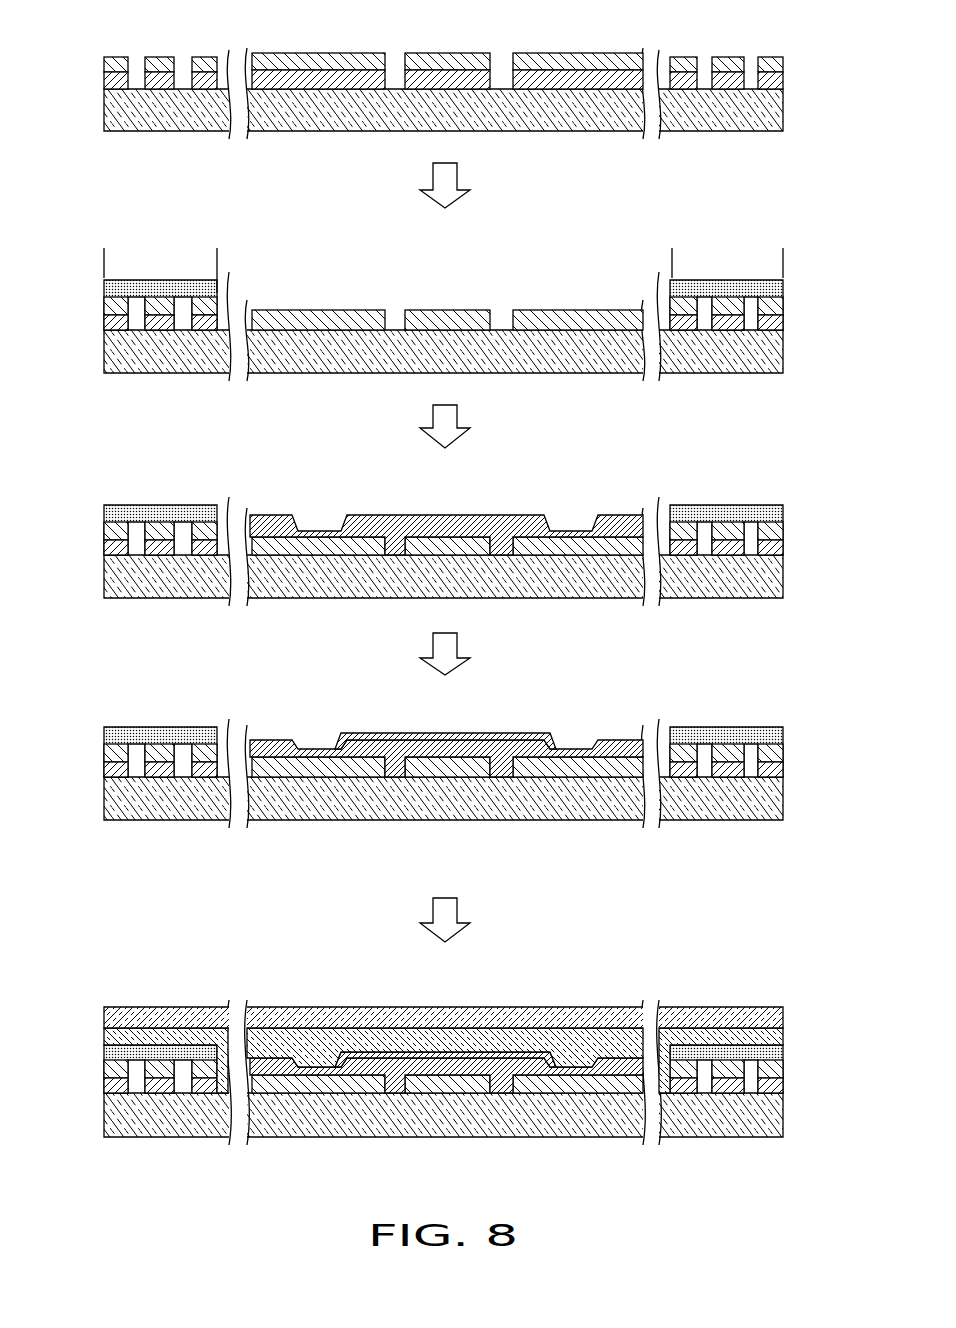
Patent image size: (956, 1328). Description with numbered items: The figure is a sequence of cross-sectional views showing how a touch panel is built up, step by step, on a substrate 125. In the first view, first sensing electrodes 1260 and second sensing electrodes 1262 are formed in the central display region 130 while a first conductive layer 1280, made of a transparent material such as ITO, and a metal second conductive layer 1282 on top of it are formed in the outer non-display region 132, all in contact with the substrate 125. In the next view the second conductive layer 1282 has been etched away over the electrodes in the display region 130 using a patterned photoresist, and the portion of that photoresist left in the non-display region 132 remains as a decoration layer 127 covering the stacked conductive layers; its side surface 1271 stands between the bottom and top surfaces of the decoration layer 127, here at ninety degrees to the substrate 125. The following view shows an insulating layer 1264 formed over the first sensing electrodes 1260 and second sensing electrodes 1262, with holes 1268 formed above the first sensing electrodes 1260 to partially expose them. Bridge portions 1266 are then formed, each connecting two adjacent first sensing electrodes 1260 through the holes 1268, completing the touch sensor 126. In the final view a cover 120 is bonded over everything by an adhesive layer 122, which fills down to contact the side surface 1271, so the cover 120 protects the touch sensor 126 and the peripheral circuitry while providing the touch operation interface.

The cover 120 is at (738, 1015).
The adhesive layer 122 is at (768, 1037).
The substrate 125 is at (103, 99).
The touch sensor 126 is at (568, 725).
The decoration layer 127 is at (108, 291).
The display region 130 is at (217, 257).
The non-display region 132 is at (783, 257).
The first sensing electrodes 1260 is at (318, 82).
The second sensing electrodes 1262 is at (452, 80).
The insulating layer 1264 is at (393, 531).
The bridge portions 1266 is at (430, 733).
The holes 1268 is at (320, 524).
The side surface 1271 is at (215, 517).
The first conductive layer 1280 is at (778, 83).
The second conductive layer 1282 is at (735, 62).